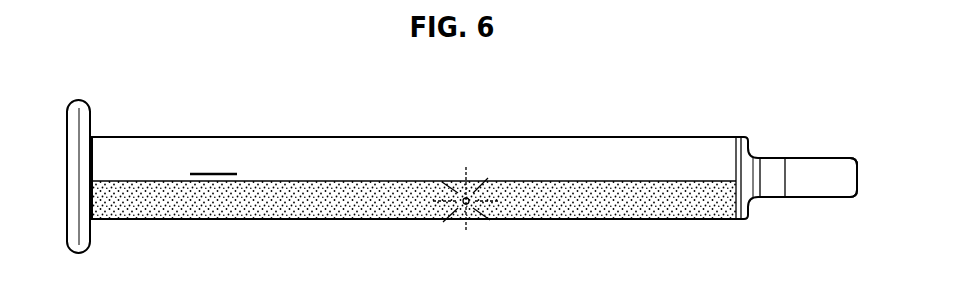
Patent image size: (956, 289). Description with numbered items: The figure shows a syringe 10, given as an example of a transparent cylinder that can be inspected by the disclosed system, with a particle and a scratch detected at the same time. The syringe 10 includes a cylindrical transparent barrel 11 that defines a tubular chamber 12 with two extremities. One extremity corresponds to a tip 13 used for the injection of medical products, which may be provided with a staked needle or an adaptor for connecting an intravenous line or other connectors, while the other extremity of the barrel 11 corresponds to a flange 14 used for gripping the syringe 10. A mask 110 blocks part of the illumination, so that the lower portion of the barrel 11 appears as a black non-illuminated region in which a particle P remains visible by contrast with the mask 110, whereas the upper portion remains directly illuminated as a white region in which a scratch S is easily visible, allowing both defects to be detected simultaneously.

The syringe 10 is at (467, 98).
The cylindrical transparent barrel 11 is at (372, 134).
The tubular chamber 12 is at (640, 158).
The tip 13 is at (818, 167).
The flange 14 is at (90, 99).
The mask 110 is at (560, 197).
The scratch S is at (213, 174).
The particle P is at (470, 204).